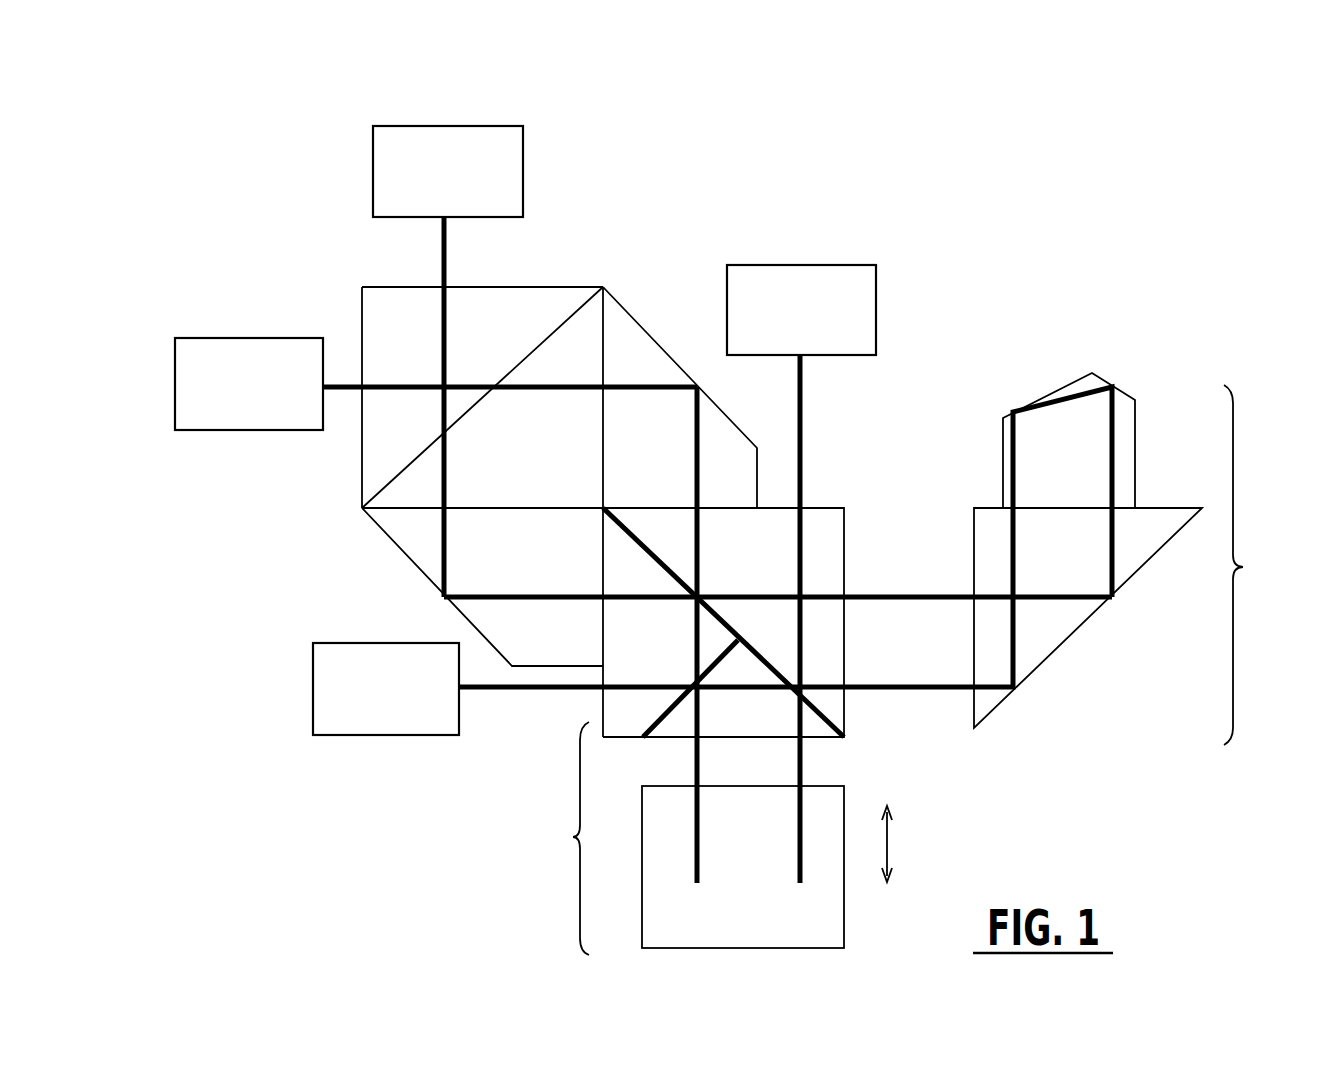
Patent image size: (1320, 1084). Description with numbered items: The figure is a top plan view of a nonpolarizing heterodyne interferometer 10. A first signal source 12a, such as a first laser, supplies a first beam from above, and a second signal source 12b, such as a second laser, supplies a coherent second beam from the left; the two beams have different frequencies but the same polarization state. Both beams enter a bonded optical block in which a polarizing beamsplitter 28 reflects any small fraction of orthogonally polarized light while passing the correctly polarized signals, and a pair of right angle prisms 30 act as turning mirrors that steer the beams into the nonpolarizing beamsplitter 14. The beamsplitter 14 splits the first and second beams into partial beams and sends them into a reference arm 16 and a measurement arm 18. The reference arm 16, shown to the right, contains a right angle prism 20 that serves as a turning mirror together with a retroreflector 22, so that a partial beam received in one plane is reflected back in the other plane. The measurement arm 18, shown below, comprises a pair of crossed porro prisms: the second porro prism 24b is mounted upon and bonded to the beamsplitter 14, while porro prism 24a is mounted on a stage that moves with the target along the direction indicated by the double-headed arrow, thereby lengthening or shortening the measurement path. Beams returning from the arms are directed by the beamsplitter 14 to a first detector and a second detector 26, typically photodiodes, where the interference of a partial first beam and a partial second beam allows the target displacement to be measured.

The heterodyne interferometer 10 is at (969, 258).
The first signal source 12a is at (498, 126).
The second signal source 12b is at (258, 338).
The beamsplitter 14 is at (832, 550).
The reference arm 16 is at (1251, 565).
The measurement arm 18 is at (564, 838).
The right angle prism 20 is at (1062, 623).
The retroreflector 22 is at (1137, 445).
The porro prism 24a is at (838, 924).
The second porro prism 24b is at (824, 722).
The detector 26 is at (815, 265).
The polarizing beamsplitter 28 is at (570, 315).
The pair of right angle prisms 30 is at (655, 357).